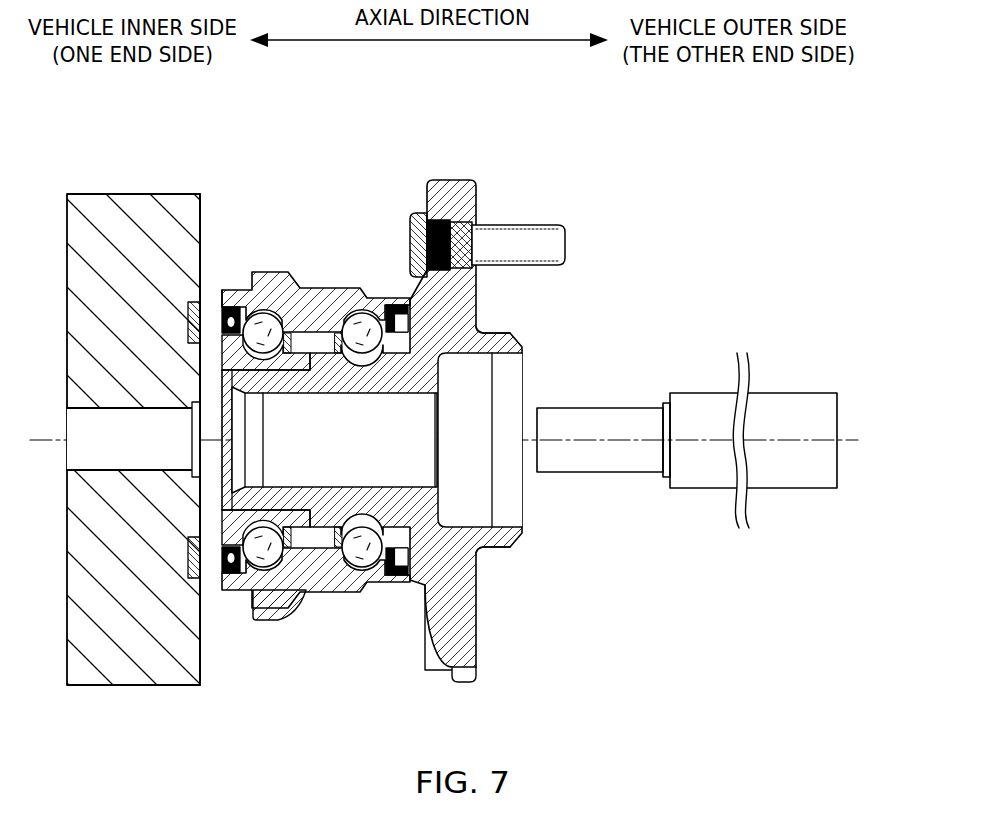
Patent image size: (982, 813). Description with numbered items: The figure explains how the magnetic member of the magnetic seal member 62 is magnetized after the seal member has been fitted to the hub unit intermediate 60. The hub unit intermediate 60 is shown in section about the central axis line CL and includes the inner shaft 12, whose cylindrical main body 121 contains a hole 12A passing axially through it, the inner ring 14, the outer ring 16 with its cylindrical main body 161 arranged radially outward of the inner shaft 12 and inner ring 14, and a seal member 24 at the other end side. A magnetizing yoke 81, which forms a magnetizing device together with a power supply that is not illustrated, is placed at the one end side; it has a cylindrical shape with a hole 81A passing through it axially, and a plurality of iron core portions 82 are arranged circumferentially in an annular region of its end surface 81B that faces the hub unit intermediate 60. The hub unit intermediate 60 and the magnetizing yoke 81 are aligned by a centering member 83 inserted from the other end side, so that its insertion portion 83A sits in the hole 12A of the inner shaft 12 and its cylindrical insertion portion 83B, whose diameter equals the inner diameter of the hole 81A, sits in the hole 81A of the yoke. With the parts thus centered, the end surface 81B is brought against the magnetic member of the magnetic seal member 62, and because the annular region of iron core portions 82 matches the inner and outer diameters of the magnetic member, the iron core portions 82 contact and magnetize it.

The inner shaft 12 is at (412, 431).
The hole 12A is at (410, 405).
The inner ring 14 is at (292, 512).
The outer ring 16 is at (316, 412).
The main body 161 is at (236, 290).
The seal member 24 is at (392, 582).
The hub unit intermediate 60 is at (399, 214).
The magnetic seal member 62 is at (233, 585).
The magnetizing yoke 81 is at (126, 392).
The hole 81A is at (113, 412).
The end surface 81B is at (200, 247).
The iron core portions 82 is at (188, 316).
The centering member 83 is at (687, 434).
The insertion portion 83A is at (770, 472).
The insertion portion 83B is at (590, 462).
The main body 121 is at (494, 554).
The central axis line CL is at (856, 445).